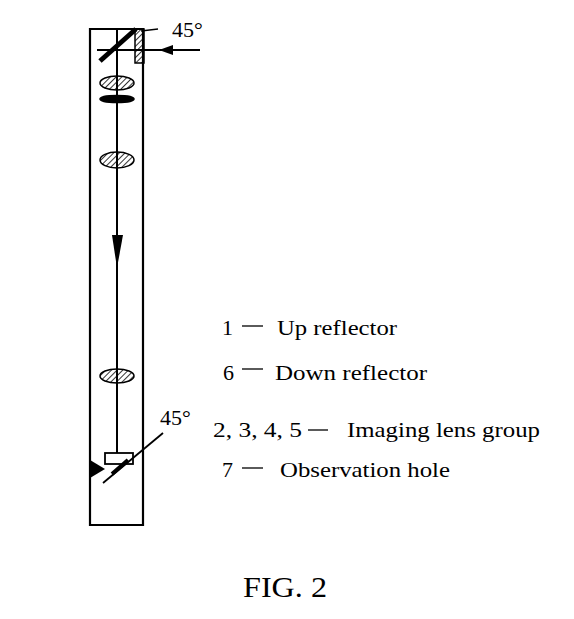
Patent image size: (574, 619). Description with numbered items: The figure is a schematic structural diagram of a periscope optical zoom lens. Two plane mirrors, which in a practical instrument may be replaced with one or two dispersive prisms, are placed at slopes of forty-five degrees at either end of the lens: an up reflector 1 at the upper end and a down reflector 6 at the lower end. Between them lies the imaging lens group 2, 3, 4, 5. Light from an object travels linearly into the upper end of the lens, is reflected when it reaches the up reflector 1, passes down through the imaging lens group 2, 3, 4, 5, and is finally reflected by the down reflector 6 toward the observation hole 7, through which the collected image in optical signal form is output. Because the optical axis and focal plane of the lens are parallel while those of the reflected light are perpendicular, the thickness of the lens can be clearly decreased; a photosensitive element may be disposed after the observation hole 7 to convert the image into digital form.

The up reflector 1 is at (108, 55).
The imaging lens group 2 is at (105, 82).
The imaging lens group 3 is at (100, 99).
The imaging lens group 4 is at (103, 155).
The imaging lens group 5 is at (101, 375).
The down reflector 6 is at (133, 457).
The observation hole 7 is at (92, 470).